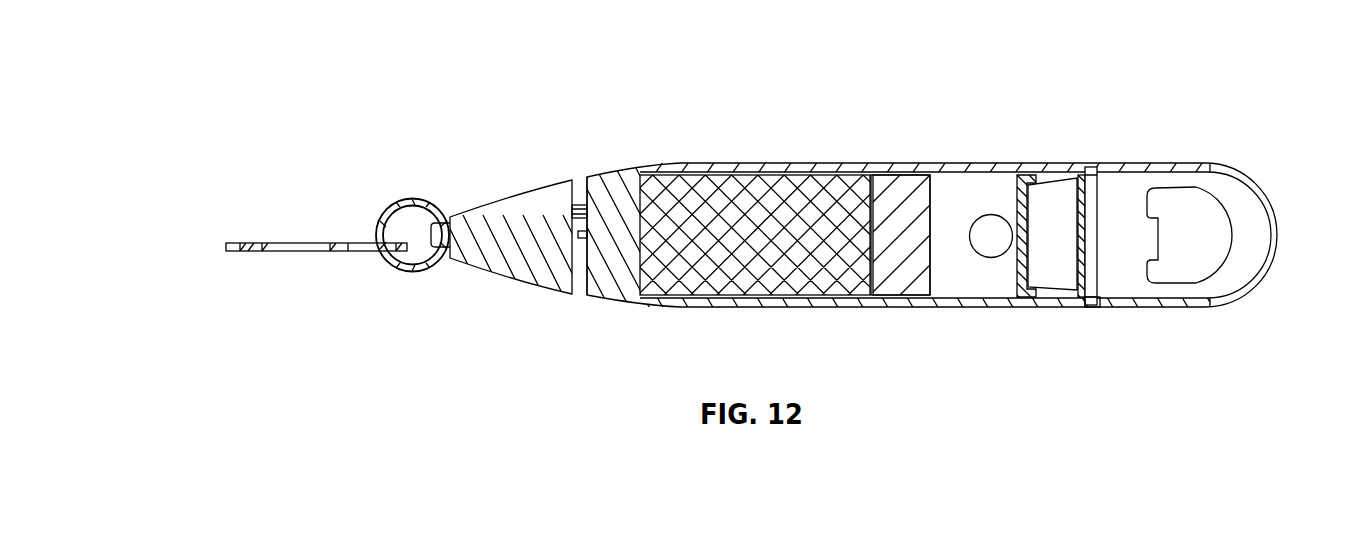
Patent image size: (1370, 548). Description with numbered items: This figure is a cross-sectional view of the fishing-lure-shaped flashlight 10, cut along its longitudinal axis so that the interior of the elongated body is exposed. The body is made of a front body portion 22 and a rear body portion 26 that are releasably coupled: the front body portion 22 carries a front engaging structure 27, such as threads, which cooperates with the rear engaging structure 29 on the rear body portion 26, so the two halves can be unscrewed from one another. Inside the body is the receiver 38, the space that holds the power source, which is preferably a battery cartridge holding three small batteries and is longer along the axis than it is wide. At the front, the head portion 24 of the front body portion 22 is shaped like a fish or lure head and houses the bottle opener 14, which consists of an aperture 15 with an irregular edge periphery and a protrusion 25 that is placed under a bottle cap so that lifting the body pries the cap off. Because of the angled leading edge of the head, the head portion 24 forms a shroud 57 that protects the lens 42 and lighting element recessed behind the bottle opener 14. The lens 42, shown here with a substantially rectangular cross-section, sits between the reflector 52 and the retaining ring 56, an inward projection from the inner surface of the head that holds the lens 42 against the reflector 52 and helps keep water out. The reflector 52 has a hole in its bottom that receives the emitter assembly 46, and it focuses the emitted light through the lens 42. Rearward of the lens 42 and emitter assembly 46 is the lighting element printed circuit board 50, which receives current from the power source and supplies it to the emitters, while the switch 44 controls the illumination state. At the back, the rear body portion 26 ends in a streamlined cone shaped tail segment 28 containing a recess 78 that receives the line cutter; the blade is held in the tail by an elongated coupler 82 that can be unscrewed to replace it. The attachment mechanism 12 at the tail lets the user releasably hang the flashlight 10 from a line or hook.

The flashlight 10 is at (205, 44).
The attachment mechanism 12 is at (295, 140).
The bottle opener 14 is at (1195, 248).
The aperture 15 is at (1189, 276).
The front body portion 22 is at (1086, 90).
The head portion 24 is at (1258, 258).
The protrusion 25 is at (1152, 235).
The rear body portion 26 is at (692, 136).
The front engaging structure 27 is at (896, 163).
The tail segment 28 is at (505, 210).
The rear engaging structure 29 is at (823, 153).
The receiver 38 is at (885, 257).
The lens 42 is at (1086, 205).
The switch 44 is at (1000, 227).
The emitter assembly 46 is at (1028, 268).
The lighting element printed circuit board 50 is at (1018, 253).
The reflector 52 is at (1045, 180).
The retaining ring 56 is at (1094, 303).
The shroud 57 is at (1180, 138).
The recess 78 is at (565, 149).
The elongated coupler 82 is at (578, 203).